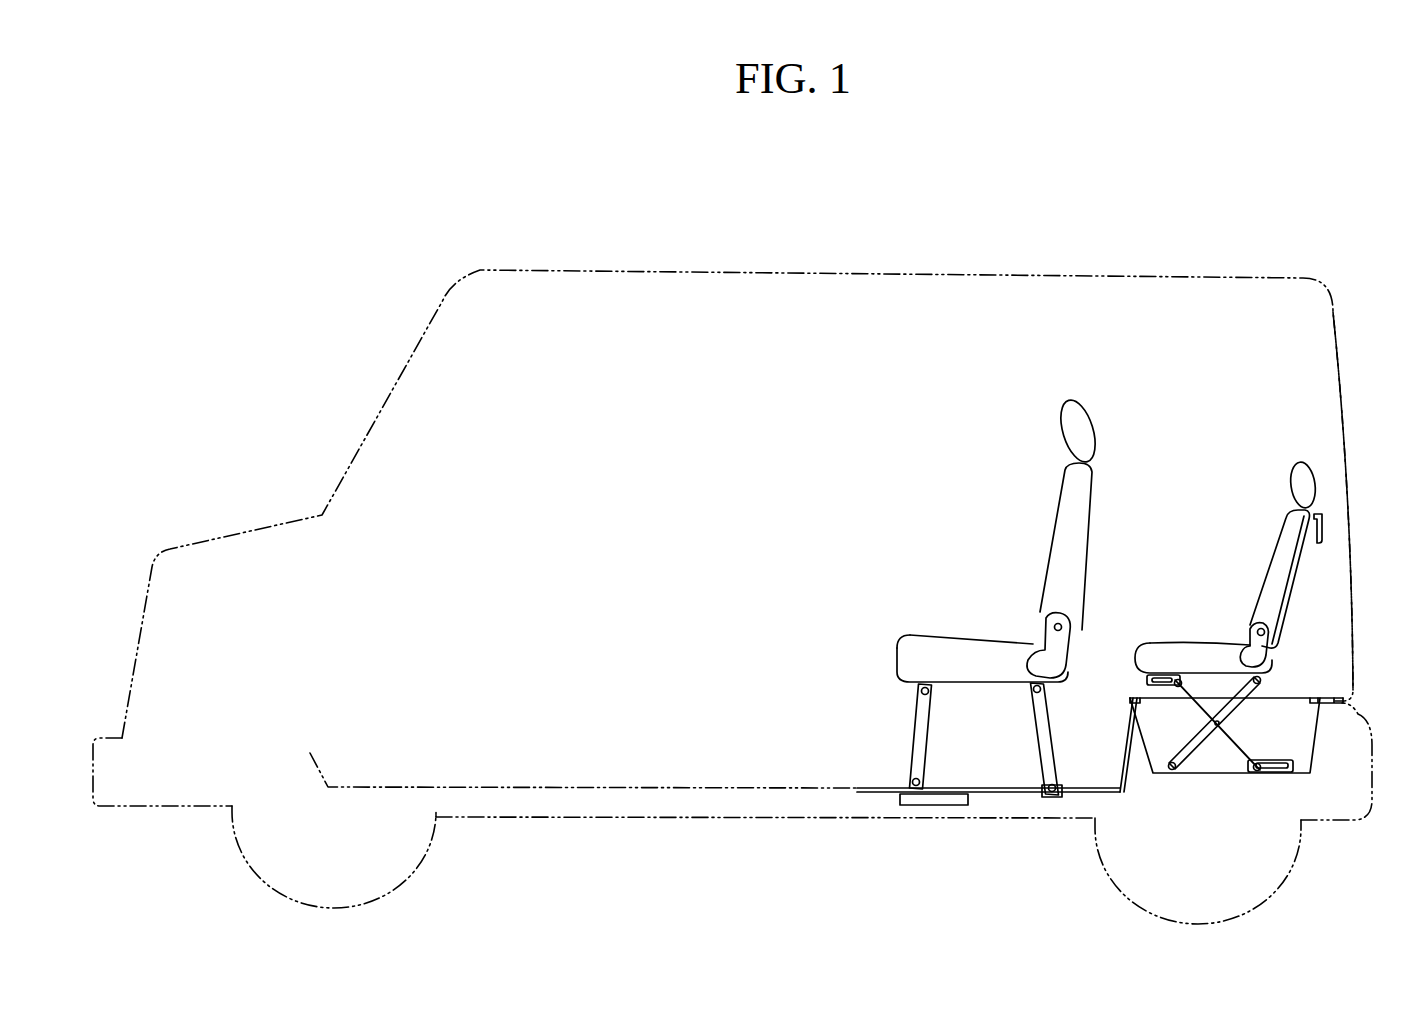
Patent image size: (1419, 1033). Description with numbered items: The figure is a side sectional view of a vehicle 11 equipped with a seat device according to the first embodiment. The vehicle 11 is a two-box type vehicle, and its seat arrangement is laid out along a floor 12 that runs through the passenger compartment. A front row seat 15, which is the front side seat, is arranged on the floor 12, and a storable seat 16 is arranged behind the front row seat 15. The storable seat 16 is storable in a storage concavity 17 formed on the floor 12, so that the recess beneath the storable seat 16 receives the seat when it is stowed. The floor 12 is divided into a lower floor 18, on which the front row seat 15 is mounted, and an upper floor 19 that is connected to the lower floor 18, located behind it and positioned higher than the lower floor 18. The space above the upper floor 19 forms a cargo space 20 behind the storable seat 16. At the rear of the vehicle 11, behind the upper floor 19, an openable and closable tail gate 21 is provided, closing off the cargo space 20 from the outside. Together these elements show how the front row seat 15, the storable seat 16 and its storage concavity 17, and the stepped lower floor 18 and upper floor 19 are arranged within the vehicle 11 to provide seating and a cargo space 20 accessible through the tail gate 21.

The vehicle 11 is at (443, 238).
The floor 12 is at (368, 786).
The front row seat 15 is at (1052, 527).
The storable seat 16 is at (1270, 557).
The storage concavity 17 is at (1227, 772).
The lower floor 18 is at (1022, 788).
The upper floor 19 is at (1313, 698).
The cargo space 20 is at (1315, 602).
The tail gate 21 is at (1338, 375).